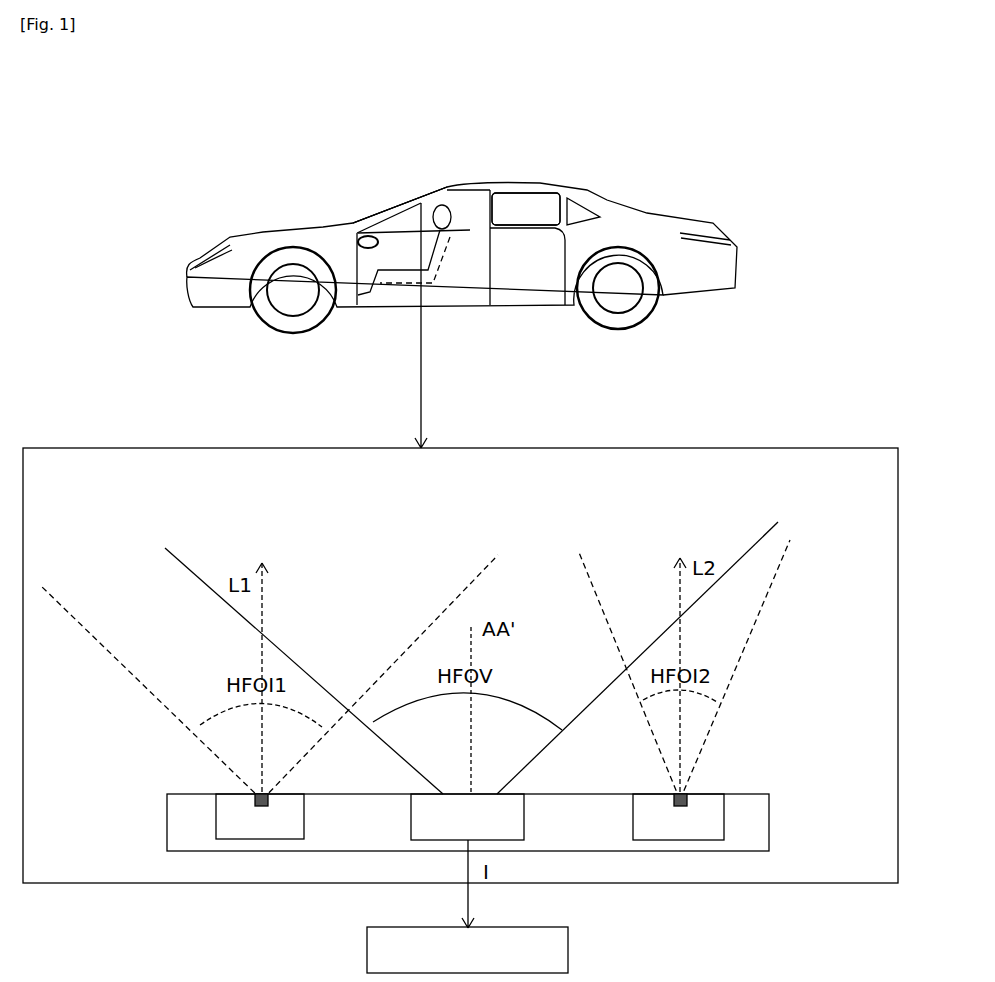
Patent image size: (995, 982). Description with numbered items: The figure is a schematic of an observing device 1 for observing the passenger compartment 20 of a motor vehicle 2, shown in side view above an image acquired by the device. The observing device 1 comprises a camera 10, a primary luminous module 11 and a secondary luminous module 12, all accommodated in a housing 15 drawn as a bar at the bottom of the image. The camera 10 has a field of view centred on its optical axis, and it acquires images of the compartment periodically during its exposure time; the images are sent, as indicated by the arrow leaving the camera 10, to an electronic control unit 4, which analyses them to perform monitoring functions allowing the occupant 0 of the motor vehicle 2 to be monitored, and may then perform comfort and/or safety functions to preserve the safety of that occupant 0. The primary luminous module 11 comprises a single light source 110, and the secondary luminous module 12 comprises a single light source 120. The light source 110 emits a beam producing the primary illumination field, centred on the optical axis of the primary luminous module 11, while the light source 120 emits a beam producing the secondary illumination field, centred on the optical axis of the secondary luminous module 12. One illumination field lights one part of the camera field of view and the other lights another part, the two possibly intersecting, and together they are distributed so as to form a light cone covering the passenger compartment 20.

The vehicle 2 is at (411, 165).
The occupant 0 is at (438, 181).
The passenger compartment 20 is at (516, 213).
The observing device 1 is at (480, 448).
The housing 15 is at (769, 822).
The primary luminous module 11 is at (260, 817).
The camera 10 is at (467, 817).
The secondary luminous module 12 is at (678, 817).
The light source 110 is at (255, 797).
The light source 120 is at (687, 796).
The electronic control unit 4 is at (467, 950).